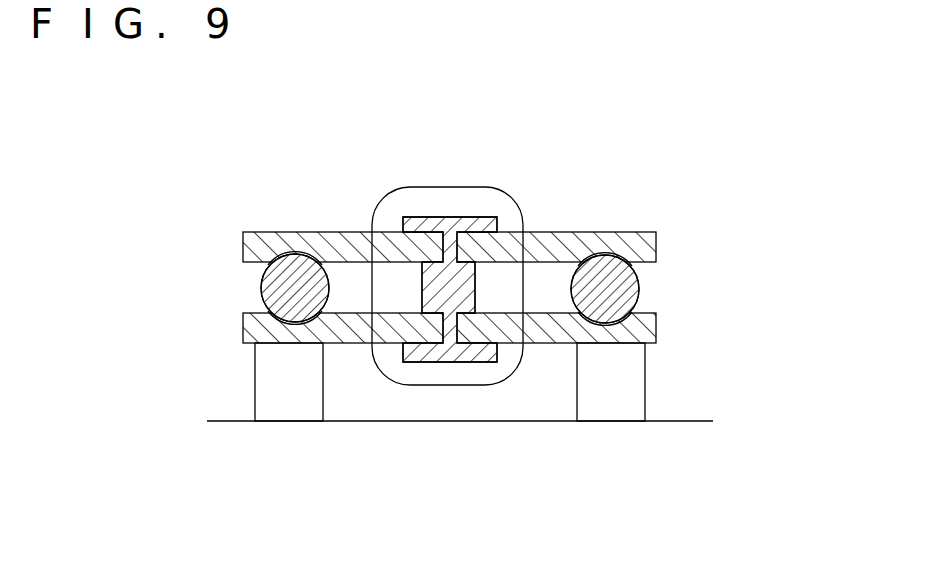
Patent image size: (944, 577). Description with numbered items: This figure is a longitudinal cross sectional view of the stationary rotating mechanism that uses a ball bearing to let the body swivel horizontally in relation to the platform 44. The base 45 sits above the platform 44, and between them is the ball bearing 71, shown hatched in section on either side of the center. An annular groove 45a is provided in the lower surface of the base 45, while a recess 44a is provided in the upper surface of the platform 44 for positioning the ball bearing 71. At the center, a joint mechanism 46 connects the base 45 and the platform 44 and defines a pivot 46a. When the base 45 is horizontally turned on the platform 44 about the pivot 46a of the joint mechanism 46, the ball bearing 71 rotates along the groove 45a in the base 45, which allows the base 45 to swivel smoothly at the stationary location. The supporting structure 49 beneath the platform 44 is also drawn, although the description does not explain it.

The platform 44 is at (657, 337).
The recess 44a is at (260, 300).
The base 45 is at (575, 237).
The annular groove 45a is at (260, 273).
The joint mechanism 46 is at (467, 373).
The pivot 46a is at (414, 238).
The base / support legs 49 is at (578, 410).
The ball bearing 71 is at (262, 287).